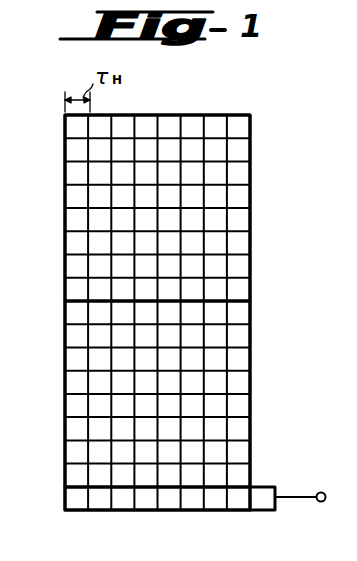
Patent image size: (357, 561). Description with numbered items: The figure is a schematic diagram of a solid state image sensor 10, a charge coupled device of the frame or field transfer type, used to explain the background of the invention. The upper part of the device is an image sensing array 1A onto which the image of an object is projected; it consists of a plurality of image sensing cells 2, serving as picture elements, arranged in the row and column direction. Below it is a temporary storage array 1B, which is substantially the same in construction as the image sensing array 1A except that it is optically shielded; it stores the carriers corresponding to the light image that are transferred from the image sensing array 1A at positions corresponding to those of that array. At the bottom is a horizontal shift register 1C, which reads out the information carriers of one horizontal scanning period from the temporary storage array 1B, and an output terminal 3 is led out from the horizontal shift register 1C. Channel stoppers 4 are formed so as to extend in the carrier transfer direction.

The image sensing array 1A is at (253, 216).
The temporary storage array 1B is at (253, 384).
The horizontal shift register 1C is at (170, 510).
The image sensing cells 2 is at (238, 130).
The output terminal 3 is at (324, 492).
The channel stoppers 4 is at (112, 222).
The solid state image sensor 10 is at (314, 313).